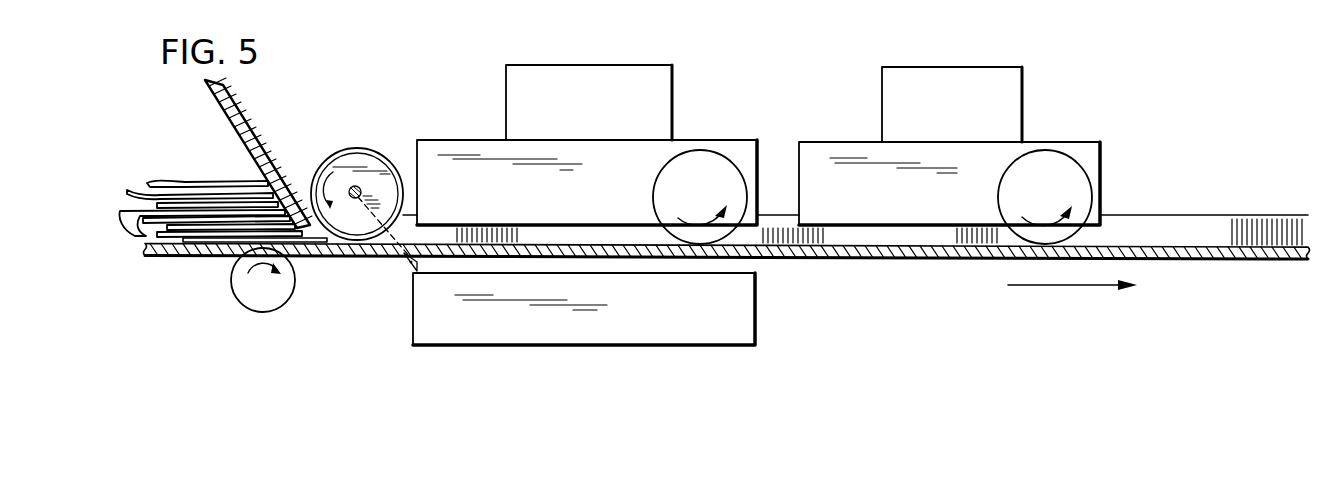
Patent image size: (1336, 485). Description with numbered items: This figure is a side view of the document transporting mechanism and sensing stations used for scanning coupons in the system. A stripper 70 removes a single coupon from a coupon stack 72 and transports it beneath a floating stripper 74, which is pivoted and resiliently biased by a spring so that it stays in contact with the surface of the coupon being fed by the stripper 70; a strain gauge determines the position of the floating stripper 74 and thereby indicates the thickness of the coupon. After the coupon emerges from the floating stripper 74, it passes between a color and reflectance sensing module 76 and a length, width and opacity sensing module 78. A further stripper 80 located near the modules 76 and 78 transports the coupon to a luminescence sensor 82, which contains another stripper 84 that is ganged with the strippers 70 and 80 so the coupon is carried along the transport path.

The stripper 70 is at (273, 293).
The coupon stack 72 is at (181, 178).
The floating stripper 74 is at (345, 172).
The color and reflectance sensing module 76 is at (540, 87).
The length, width and opacity sensing module 78 is at (740, 317).
The stripper 80 is at (698, 178).
The luminescence sensor 82 is at (1007, 92).
The stripper 84 is at (1043, 180).